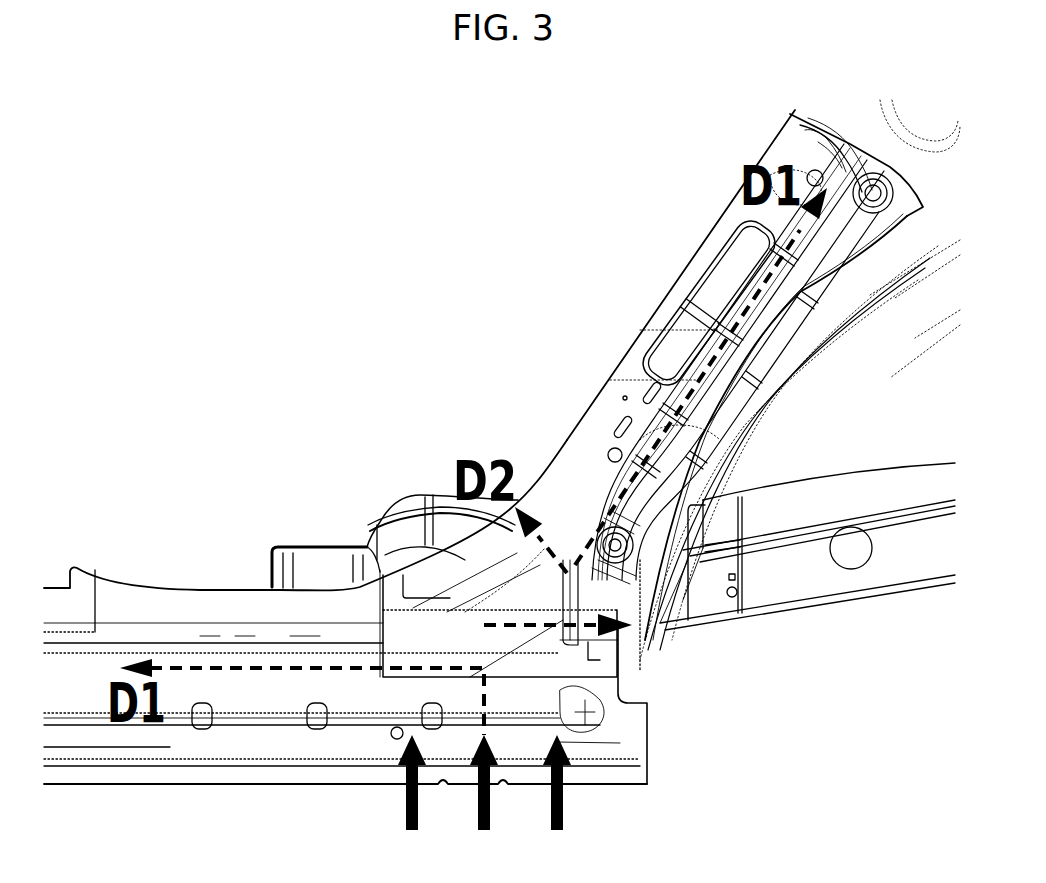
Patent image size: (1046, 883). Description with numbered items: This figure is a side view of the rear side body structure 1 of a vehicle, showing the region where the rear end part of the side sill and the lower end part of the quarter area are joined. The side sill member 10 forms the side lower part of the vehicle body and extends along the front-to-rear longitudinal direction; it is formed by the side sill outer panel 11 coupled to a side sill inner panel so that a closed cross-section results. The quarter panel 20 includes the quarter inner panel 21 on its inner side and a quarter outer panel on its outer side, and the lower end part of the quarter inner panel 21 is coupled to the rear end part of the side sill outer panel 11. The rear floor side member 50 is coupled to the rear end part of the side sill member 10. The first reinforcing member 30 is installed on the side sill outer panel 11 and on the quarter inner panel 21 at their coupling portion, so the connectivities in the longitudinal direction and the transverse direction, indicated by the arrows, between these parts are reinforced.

The rear side body structure 1 is at (668, 733).
The side sill member 10 is at (265, 694).
The side sill outer panel 11 is at (350, 688).
The quarter panel 20 is at (820, 340).
The quarter inner panel 21 is at (748, 380).
The first reinforcing member 30 is at (649, 319).
The rear floor side member 50 is at (790, 565).